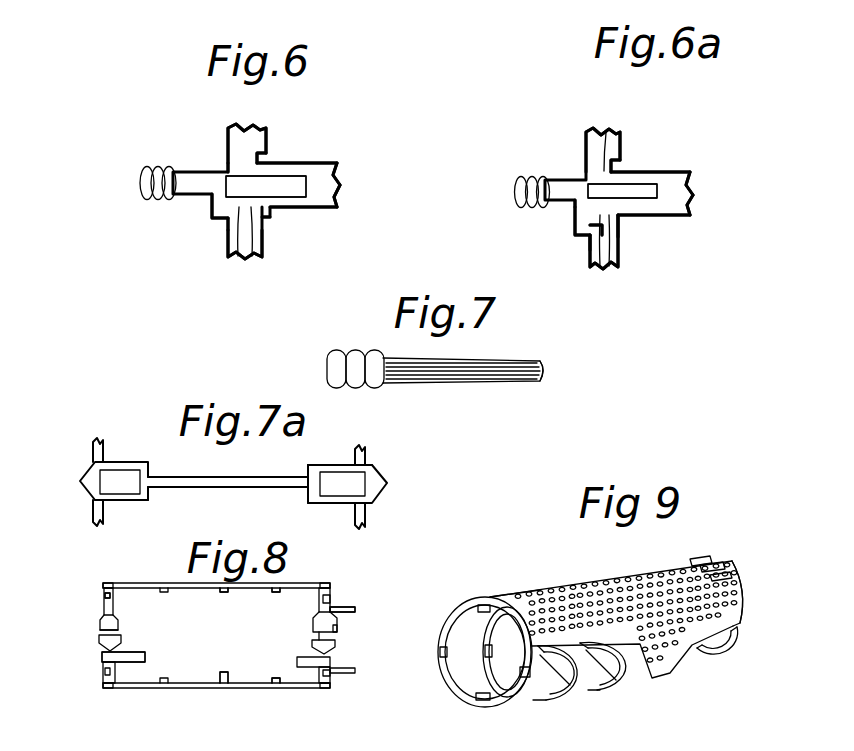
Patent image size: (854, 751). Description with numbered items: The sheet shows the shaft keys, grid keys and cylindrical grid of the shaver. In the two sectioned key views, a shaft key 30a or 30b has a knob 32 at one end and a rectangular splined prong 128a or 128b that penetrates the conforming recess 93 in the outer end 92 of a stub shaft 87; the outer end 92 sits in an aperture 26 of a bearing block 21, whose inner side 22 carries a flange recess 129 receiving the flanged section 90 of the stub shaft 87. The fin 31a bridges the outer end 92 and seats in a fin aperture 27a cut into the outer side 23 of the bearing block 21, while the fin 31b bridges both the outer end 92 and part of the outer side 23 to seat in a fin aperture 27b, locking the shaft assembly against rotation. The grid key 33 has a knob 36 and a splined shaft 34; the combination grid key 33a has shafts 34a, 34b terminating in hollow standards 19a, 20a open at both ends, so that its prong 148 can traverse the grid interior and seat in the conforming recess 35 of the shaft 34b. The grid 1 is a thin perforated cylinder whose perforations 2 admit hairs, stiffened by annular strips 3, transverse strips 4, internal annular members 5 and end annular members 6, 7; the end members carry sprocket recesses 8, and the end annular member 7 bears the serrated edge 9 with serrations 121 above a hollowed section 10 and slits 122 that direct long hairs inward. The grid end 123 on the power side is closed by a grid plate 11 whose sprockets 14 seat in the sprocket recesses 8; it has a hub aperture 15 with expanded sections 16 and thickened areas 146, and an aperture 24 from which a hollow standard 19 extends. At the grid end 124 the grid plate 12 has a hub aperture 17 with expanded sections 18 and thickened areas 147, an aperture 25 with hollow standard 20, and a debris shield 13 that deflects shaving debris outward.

In FIG. 8, the grid 1 is at (300, 585).
In FIG. 9, the grid 1 is at (670, 687).
In FIG. 9, the perforations 2 is at (592, 587).
In FIG. 9, the annular strips 3 is at (495, 597).
In FIG. 9, the transverse strips 4 is at (635, 580).
In FIG. 8, the internal annular members 5 is at (226, 592).
In FIG. 9, the internal annular members 5 is at (547, 694).
In FIG. 8, the end annular member 6 is at (113, 595).
In FIG. 9, the end annular member 6 is at (474, 703).
In FIG. 8, the end annular member 7 is at (318, 595).
In FIG. 9, the end annular member 7 is at (738, 648).
In FIG. 8, the sprocket recesses 8 is at (103, 687).
In FIG. 9, the sprocket recesses 8 is at (485, 605).
In FIG. 8, the serrated edge 9 is at (330, 592).
In FIG. 9, the serrated edge 9 is at (701, 549).
In FIG. 8, the hollowed section 10 is at (370, 592).
In FIG. 7A, the grid plate 11 is at (90, 508).
In FIG. 8, the grid plate 11 is at (104, 605).
In FIG. 7A, the grid plate 12 is at (367, 460).
In FIG. 8, the grid plate 12 is at (319, 613).
In FIG. 7A, the debris shield 13 is at (368, 517).
In FIG. 8, the debris shield 13 is at (355, 614).
In FIG. 8, the sprockets 14 is at (103, 672).
In FIG. 8, the hub aperture 15 is at (99, 639).
In FIG. 8, the expanded sections 16 is at (103, 631).
In FIG. 8, the hub aperture 17 is at (337, 640).
In FIG. 8, the expanded sections 18 is at (318, 655).
In FIG. 8, the hollow standard 19 is at (145, 658).
In FIG. 8, the hollow standard 20 is at (285, 685).
In FIG. 6, the bearing blocks 21 is at (240, 223).
In FIG. 6A, the bearing blocks 21 is at (591, 158).
In FIG. 6, the inner sides 22 is at (267, 130).
In FIG. 6A, the inner sides 22 is at (620, 240).
In FIG. 6, the outer sides 23 is at (240, 247).
In FIG. 6A, the outer sides 23 is at (583, 233).
In FIG. 8, the aperture 24 is at (103, 656).
In FIG. 8, the aperture 25 is at (333, 661).
In FIG. 6, the apertures 26 is at (260, 223).
In FIG. 6A, the apertures 26 is at (620, 155).
In FIG. 6, the fin aperture 27a is at (227, 223).
In FIG. 6A, the fin aperture 27b is at (593, 240).
In FIG. 6, the shaft key 30a is at (195, 203).
In FIG. 6A, the shaft key 30b is at (510, 198).
In FIG. 6, the fin 31a is at (213, 213).
In FIG. 6A, the fin 31b is at (578, 225).
In FIG. 6, the knobs 32 is at (140, 182).
In FIG. 6A, the knobs 32 is at (515, 183).
In FIG. 7, the grid key 33 is at (552, 365).
In FIG. 7A, the combination grid key 33a is at (200, 475).
In FIG. 7, the shaft 34 is at (535, 385).
In FIG. 7A, the shaft 34a is at (106, 491).
In FIG. 7A, the shaft 34b is at (328, 493).
In FIG. 7A, the conforming recess 35 is at (313, 490).
In FIG. 7, the knobs 36 is at (350, 350).
In FIG. 6, the stub shaft 87 is at (320, 190).
In FIG. 6A, the stub shaft 87 is at (677, 197).
In FIG. 6, the flanged sections 90 is at (267, 162).
In FIG. 6A, the flanged sections 90 is at (620, 172).
In FIG. 6, the outer end 92 is at (228, 172).
In FIG. 6A, the outer end 92 is at (575, 207).
In FIG. 6, the conforming recess 93 is at (333, 170).
In FIG. 6A, the conforming recess 93 is at (690, 182).
In FIG. 9, the serrations 121 is at (737, 571).
In FIG. 9, the slits 122 is at (714, 562).
In FIG. 8, the grid end 123 is at (103, 585).
In FIG. 9, the grid end 123 is at (445, 682).
In FIG. 8, the grid end 124 is at (322, 585).
In FIG. 9, the grid end 124 is at (746, 611).
In FIG. 6, the prong 128a is at (233, 196).
In FIG. 6A, the prong 128b is at (600, 199).
In FIG. 6, the flange recesses 129 is at (257, 153).
In FIG. 6A, the flange recesses 129 is at (620, 158).
In FIG. 8, the thickened area 146 is at (118, 622).
In FIG. 8, the thickened area 147 is at (318, 640).
In FIG. 7A, the prong 148 is at (258, 488).
In FIG. 7A, the hollow standard 19a is at (125, 500).
In FIG. 7A, the hollow standard 20a is at (330, 465).